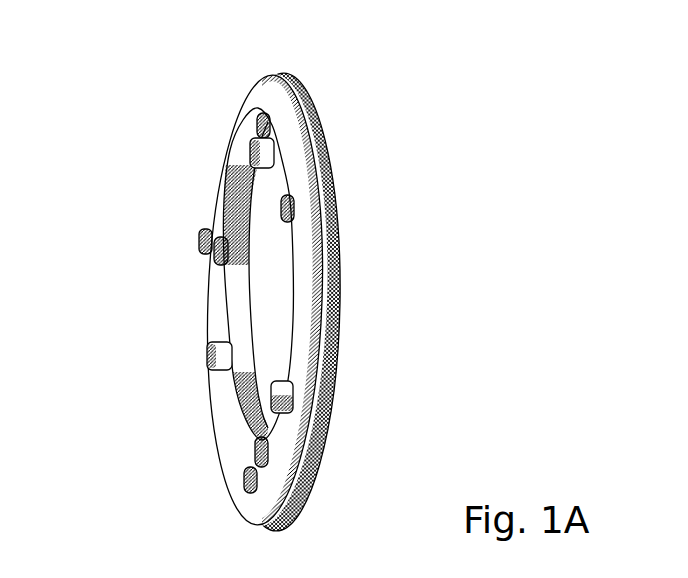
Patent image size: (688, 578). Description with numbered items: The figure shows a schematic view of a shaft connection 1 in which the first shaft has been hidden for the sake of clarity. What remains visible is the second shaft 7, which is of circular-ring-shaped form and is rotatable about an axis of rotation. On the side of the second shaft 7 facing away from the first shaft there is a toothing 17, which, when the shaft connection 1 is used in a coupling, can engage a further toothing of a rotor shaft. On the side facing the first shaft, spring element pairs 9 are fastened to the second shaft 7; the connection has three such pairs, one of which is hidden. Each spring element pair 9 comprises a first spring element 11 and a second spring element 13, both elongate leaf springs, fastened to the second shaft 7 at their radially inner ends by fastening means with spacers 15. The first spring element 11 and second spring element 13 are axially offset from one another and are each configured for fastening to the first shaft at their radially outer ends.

The shaft connection 1 is at (80, 120).
The second shaft 7 is at (264, 82).
The spring element pairs 9 is at (196, 148).
The first spring element 11 is at (240, 118).
The second spring element 13 is at (199, 231).
The spacers 15 is at (277, 158).
The toothing 17 is at (342, 258).